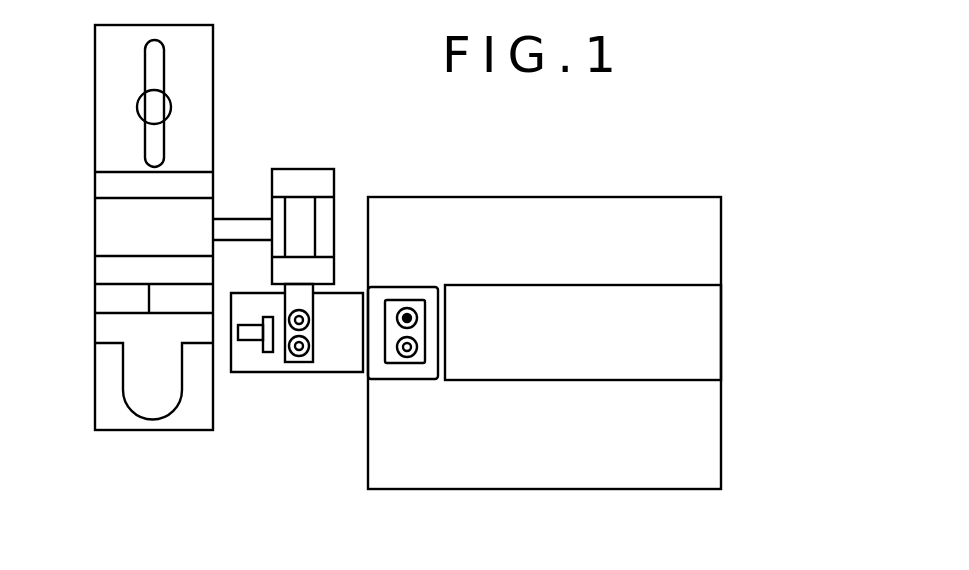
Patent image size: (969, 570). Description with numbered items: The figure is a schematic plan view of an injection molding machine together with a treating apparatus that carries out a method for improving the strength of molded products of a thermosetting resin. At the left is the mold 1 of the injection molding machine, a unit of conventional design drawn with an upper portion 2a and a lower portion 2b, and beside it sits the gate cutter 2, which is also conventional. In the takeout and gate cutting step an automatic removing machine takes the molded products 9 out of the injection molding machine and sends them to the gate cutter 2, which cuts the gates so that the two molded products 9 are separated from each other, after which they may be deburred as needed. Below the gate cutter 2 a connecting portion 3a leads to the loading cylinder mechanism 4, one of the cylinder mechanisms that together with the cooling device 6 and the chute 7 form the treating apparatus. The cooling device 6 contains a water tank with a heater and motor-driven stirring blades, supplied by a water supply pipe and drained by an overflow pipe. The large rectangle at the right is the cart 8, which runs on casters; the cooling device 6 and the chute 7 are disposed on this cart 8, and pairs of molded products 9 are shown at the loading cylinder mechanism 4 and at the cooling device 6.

The mold of an injection molding machine 1 is at (213, 100).
The gate cutter 2 is at (297, 170).
The upper portion 2a is at (127, 268).
The lower portion 2b is at (117, 328).
The connecting plate 3a is at (290, 300).
The loading cylinder mechanism 4 is at (265, 352).
The cooling device 6 is at (390, 303).
The chute 7 is at (523, 369).
The cart 8 is at (613, 472).
The molded products 9 is at (300, 356).